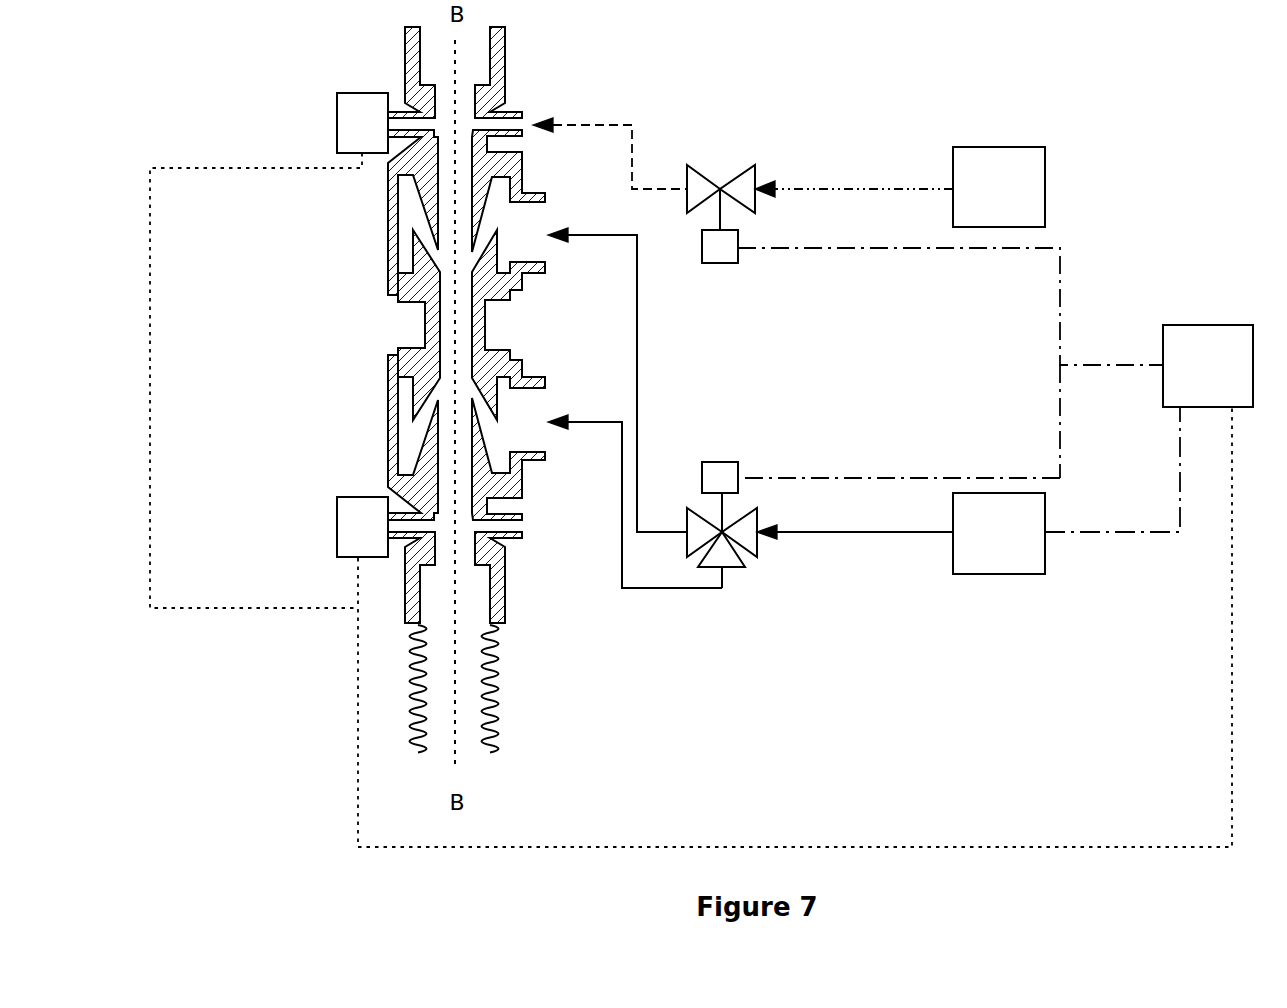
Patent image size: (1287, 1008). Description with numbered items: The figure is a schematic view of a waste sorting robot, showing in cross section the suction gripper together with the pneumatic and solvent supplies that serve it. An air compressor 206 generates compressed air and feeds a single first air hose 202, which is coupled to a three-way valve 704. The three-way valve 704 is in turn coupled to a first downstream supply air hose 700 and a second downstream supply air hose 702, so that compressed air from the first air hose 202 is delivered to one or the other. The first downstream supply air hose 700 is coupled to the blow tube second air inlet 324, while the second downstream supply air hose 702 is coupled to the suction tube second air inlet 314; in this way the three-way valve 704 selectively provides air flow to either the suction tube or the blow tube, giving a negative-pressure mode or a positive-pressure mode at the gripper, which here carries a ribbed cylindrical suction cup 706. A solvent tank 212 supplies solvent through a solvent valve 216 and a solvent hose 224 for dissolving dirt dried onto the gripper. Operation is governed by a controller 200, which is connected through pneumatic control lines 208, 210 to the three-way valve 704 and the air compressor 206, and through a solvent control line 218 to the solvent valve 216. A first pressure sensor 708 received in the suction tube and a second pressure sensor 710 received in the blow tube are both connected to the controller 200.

The controller 200 is at (1208, 366).
The first air hose 202 is at (880, 532).
The air compressor 206 is at (999, 533).
The pneumatic control line 208 is at (880, 476).
The pneumatic control line 210 is at (1137, 532).
The solvent tank 212 is at (900, 187).
The solvent valve 216 is at (757, 165).
The solvent control line 218 is at (1060, 267).
The solvent hose 224 is at (597, 125).
The suction tube second air inlet 314 is at (548, 456).
The blow tube second air inlet 324 is at (545, 265).
The first downstream supply air hose 700 is at (637, 390).
The second downstream supply air hose 702 is at (622, 590).
The three-way valve 704 is at (752, 555).
The ribbed cylindrical suction cup 706 is at (495, 728).
The first pressure sensor 708 is at (337, 522).
The second pressure sensor 710 is at (337, 95).